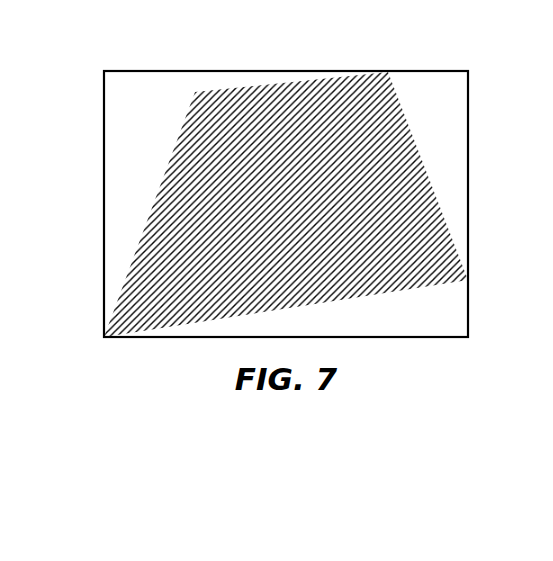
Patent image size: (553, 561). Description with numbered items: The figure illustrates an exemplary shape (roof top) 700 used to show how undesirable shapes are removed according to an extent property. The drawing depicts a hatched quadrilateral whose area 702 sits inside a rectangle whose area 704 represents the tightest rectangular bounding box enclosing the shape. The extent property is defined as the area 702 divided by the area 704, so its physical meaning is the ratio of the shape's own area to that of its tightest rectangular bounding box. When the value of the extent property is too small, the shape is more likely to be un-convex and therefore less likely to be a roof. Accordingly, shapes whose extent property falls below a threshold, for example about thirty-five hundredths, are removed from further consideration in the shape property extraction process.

The exemplary shape (roof top) 700 is at (284, 181).
The area 702 is at (188, 178).
The area 704 is at (440, 109).